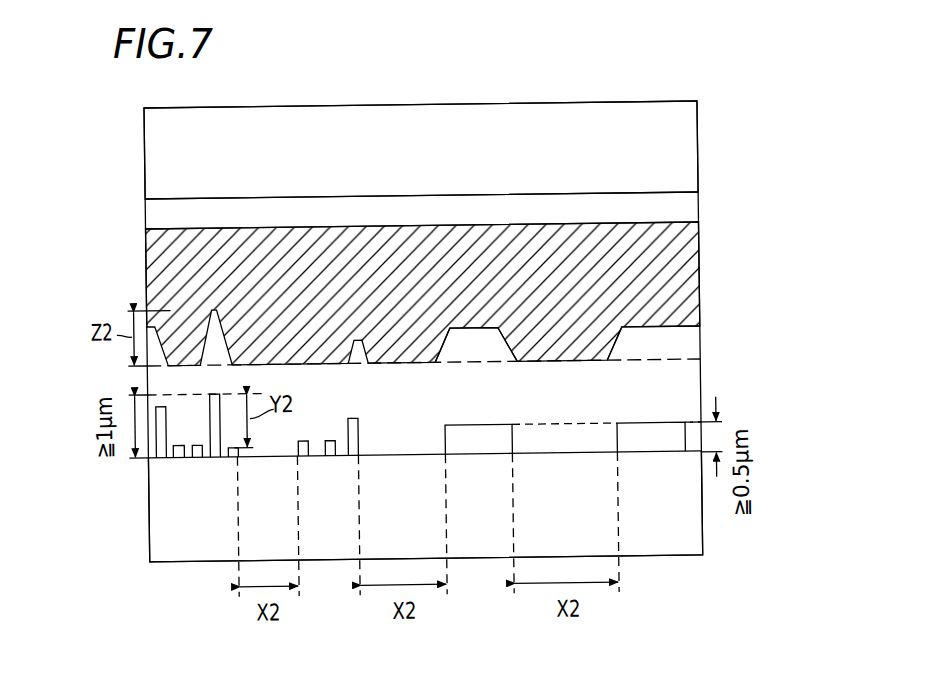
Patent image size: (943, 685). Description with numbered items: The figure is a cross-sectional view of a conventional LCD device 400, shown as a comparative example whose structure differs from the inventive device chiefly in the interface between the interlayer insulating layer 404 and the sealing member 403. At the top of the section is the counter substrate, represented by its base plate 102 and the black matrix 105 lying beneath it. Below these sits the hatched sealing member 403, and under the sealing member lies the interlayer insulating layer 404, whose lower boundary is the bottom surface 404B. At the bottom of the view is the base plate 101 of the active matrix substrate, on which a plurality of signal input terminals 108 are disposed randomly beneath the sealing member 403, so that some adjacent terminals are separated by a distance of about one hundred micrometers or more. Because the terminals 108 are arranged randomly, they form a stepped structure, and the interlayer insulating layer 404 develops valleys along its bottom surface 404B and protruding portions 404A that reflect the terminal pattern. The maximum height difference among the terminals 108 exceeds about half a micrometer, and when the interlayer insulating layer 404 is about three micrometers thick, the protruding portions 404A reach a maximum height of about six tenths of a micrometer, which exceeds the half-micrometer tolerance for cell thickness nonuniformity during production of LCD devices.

The conventional LCD device 400 is at (631, 84).
The base plate 102 is at (363, 131).
The black matrix 105 is at (162, 215).
The sealing member 403 is at (163, 273).
The interlayer insulating layer 404 is at (155, 383).
The protruding portions 404A is at (485, 347).
The bottom surface 404B is at (581, 460).
The base plate 101 is at (680, 537).
The signal input terminals 108 is at (172, 462).